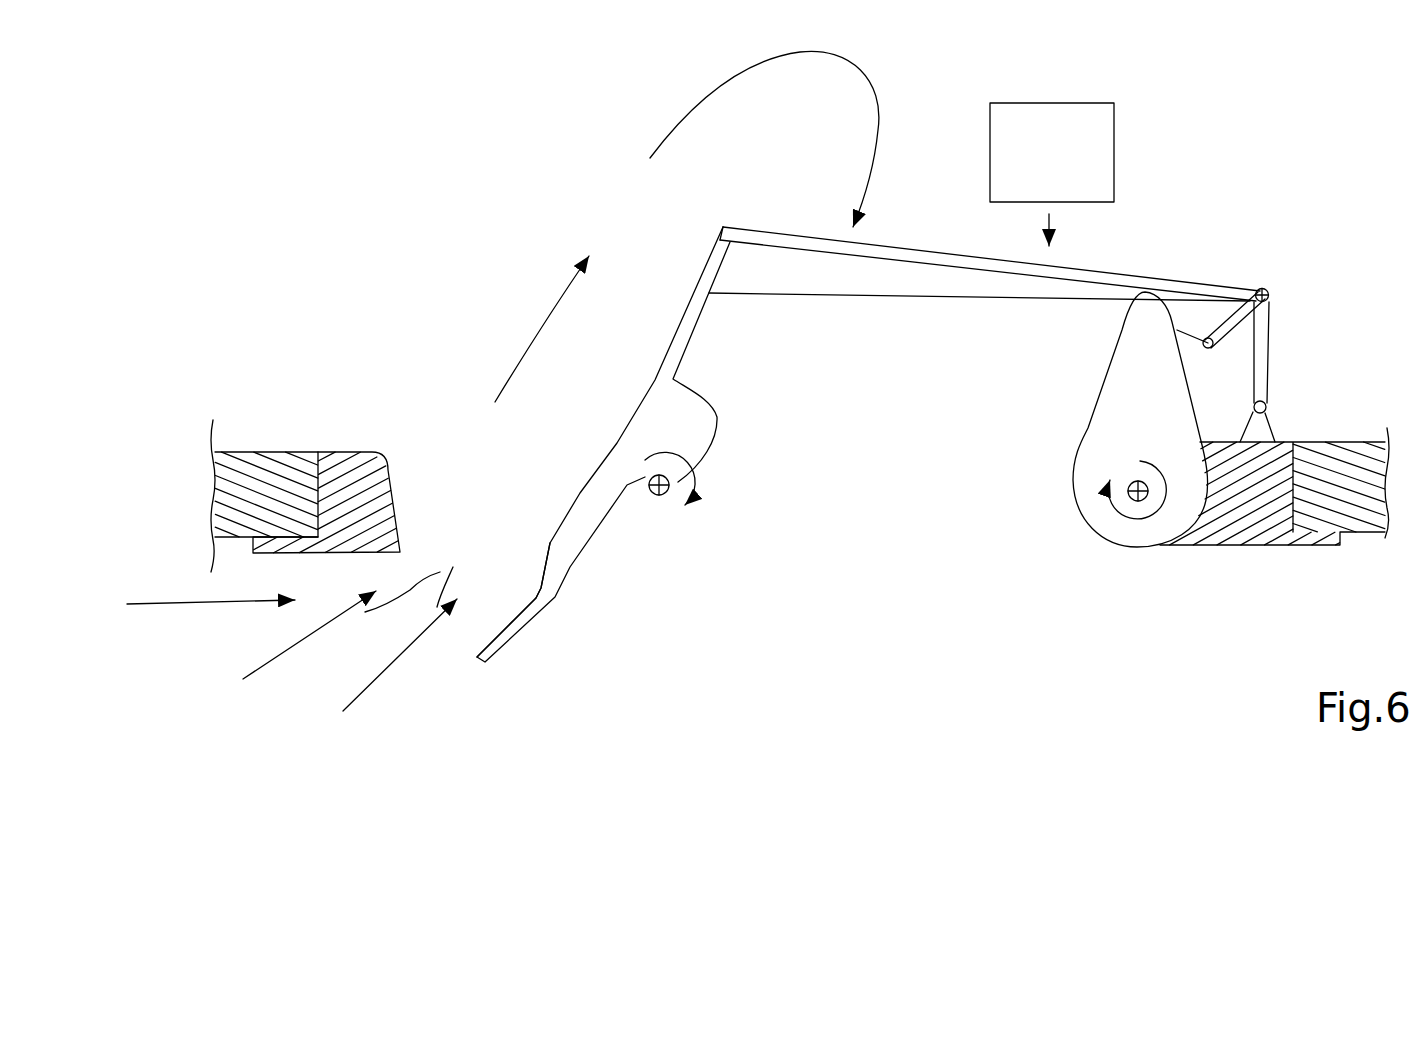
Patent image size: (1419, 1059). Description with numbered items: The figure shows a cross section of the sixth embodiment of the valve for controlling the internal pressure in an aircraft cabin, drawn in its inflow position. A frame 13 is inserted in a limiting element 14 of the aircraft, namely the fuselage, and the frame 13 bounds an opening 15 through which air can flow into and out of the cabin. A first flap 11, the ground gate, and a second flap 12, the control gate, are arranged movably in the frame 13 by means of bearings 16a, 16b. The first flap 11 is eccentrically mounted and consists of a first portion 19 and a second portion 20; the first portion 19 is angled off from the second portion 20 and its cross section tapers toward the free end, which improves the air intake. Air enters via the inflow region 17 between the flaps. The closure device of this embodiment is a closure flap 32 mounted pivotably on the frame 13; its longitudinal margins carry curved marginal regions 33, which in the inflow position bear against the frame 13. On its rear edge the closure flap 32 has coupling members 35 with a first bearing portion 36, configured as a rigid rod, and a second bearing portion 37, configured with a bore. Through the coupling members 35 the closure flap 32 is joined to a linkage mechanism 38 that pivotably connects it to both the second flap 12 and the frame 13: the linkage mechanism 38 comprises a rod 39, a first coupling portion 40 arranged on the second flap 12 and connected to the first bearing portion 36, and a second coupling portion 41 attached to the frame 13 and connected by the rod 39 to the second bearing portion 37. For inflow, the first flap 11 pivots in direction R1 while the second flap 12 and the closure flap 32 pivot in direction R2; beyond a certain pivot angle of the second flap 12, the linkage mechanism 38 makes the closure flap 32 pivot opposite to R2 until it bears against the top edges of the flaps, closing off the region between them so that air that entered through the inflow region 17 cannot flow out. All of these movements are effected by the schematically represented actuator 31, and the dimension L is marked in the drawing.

The first flap 11 is at (616, 438).
The second flap 12 is at (1071, 442).
The frame 13 is at (325, 453).
The limiting element 14 is at (252, 452).
The opening 15 is at (466, 430).
The bearing 16a is at (647, 497).
The bearing 16b is at (1130, 503).
The inflow region 17 is at (457, 477).
The first portion 19 is at (550, 560).
The second portion 20 is at (690, 302).
The actuator 31 is at (1052, 174).
The closure flap 32 is at (1116, 280).
The marginal regions 33 is at (767, 277).
The coupling members 35 is at (1254, 276).
The first bearing portion 36 is at (1223, 323).
The second bearing portion 37 is at (1266, 289).
The linkage mechanism 38 is at (1280, 303).
The rod 39 is at (1260, 346).
The first coupling portion 40 is at (1190, 352).
The second coupling portion 41 is at (1272, 423).
The pivot direction of the first flap R1 is at (703, 478).
The pivot direction of the second flap R2 is at (1147, 520).
The length L is at (413, 566).